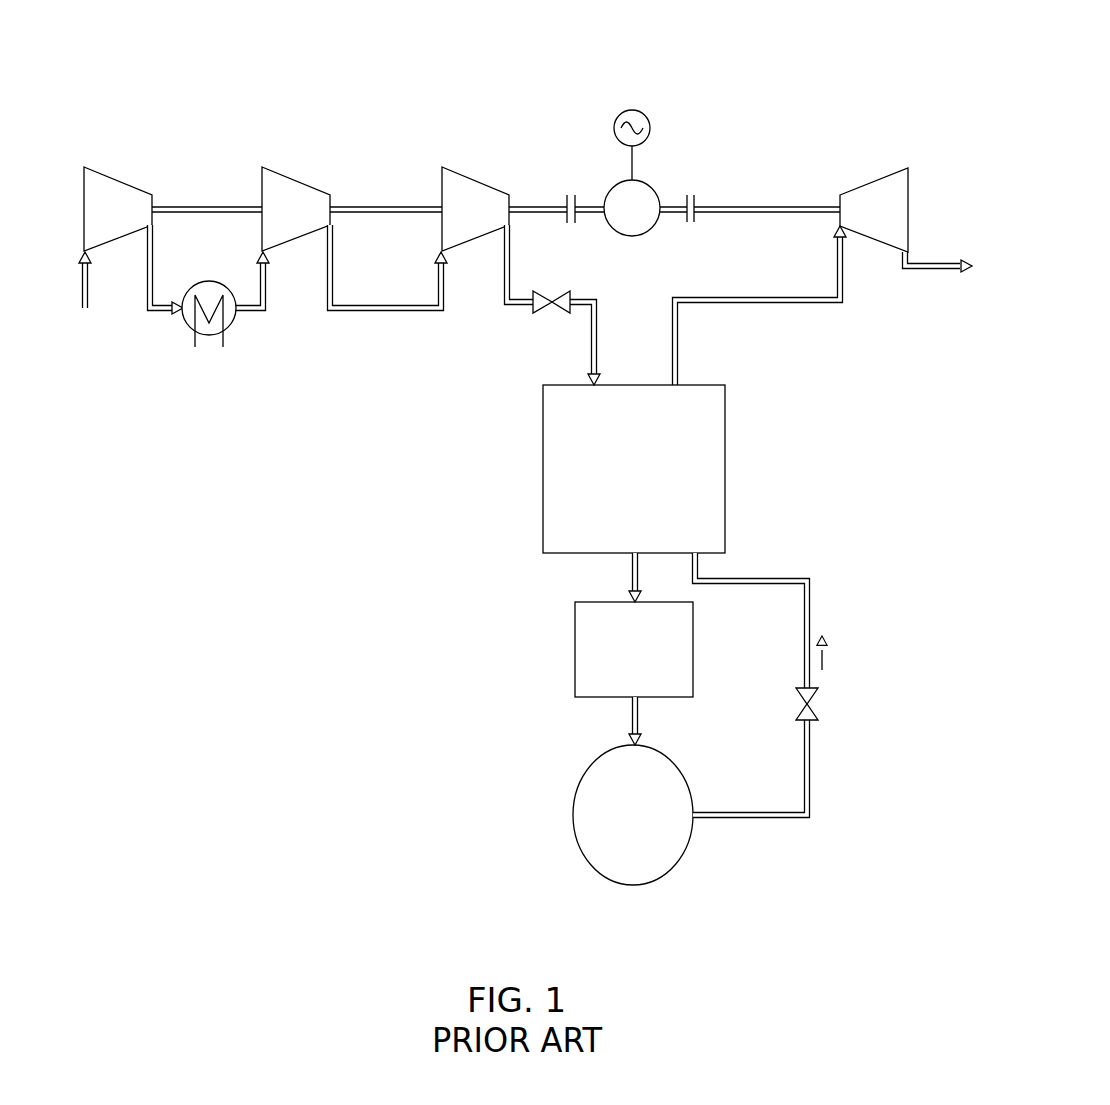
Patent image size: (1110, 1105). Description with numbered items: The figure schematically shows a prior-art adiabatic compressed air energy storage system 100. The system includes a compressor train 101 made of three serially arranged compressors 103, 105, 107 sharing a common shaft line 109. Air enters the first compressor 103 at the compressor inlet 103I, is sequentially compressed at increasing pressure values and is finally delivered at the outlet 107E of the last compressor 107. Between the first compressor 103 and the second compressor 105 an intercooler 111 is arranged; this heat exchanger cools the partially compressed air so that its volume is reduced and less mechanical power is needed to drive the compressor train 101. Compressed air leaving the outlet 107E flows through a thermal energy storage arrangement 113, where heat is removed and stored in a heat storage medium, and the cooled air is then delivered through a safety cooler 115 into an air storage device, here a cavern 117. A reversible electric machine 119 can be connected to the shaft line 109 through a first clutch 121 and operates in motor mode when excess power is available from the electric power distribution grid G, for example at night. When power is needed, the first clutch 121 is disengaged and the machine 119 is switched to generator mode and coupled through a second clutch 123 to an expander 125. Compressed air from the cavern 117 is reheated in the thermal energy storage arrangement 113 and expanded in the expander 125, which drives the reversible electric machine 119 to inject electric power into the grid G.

The ACAES system 100 is at (745, 62).
The compressor train 101 is at (510, 140).
The first compressor 103 is at (150, 162).
The compressor inlet 103I is at (78, 300).
The second compressor 105 is at (312, 178).
The last compressor 107 is at (487, 178).
The outlet 107E is at (503, 290).
The shaft line 109 is at (388, 213).
The intercooler 111 is at (210, 340).
The thermal energy storage arrangement 113 is at (543, 467).
The safety cooler 115 is at (575, 645).
The cavern 117 is at (573, 810).
The reversible electric machine 119 is at (632, 237).
The first clutch 121 is at (560, 222).
The second clutch 123 is at (697, 221).
The expander 125 is at (872, 180).
The electric power distribution grid G is at (647, 117).